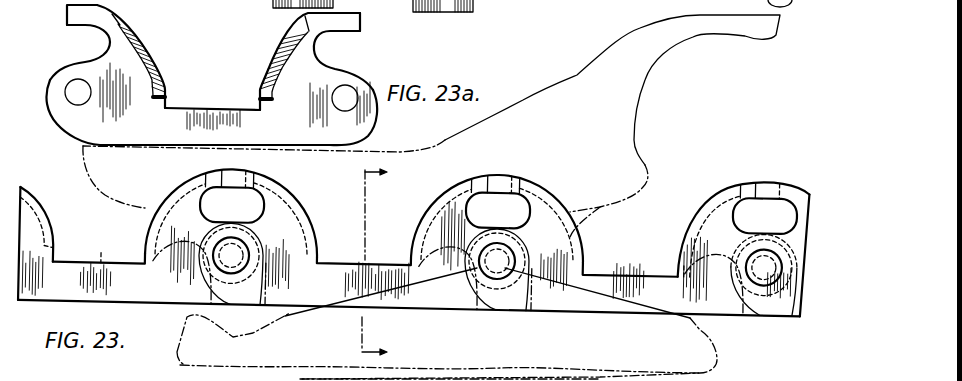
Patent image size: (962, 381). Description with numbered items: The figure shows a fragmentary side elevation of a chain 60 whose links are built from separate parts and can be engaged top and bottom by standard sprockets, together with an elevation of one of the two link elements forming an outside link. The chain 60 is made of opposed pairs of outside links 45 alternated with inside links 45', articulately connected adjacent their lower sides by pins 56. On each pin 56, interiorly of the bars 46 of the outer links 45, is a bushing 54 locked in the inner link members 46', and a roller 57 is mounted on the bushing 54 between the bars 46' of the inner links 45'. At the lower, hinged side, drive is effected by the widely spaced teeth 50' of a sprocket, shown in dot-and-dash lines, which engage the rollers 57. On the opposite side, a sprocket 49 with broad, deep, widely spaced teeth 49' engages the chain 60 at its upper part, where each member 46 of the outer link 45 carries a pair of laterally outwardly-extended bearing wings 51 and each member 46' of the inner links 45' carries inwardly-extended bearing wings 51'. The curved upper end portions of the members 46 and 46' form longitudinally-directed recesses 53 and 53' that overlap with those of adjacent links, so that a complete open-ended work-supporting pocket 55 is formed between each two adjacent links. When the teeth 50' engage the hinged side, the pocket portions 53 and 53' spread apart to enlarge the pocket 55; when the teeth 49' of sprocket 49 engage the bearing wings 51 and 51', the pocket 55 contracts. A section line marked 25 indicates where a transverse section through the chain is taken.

In FIG. 23, the section line 25- 25 is at (386, 265).
In FIG. 23, the outside link 45 is at (413, 265).
In FIG. 23, the inside link 45' is at (408, 329).
In FIG. 23A, the bar of outer link 46 is at (439, 65).
In FIG. 23, the bar of outer link 46 is at (425, 252).
In FIG. 23, the inner link member 46' is at (431, 207).
In FIG. 23, the sprocket 49 is at (431, 198).
In FIG. 23, the teeth of sprocket 49 49' is at (411, 230).
In FIG. 23, the teeth of sprocket 50 50' is at (450, 298).
In FIG. 23A, the bearing wing 51 is at (262, 57).
In FIG. 23, the bearing wing 51 is at (370, 215).
In FIG. 23, the bearing wing 51' is at (414, 223).
In FIG. 23A, the recess 53 is at (272, 46).
In FIG. 23, the recess 53 is at (464, 176).
In FIG. 23, the recess 53' is at (509, 175).
In FIG. 23, the bushing 54 is at (248, 235).
In FIG. 23A, the work-supporting pocket 55 is at (508, 10).
In FIG. 23, the work-supporting pocket 55 is at (499, 210).
In FIG. 23, the pin 56 is at (222, 257).
In FIG. 23, the roller 57 is at (262, 248).
In FIG. 23, the chain 60 is at (610, 217).